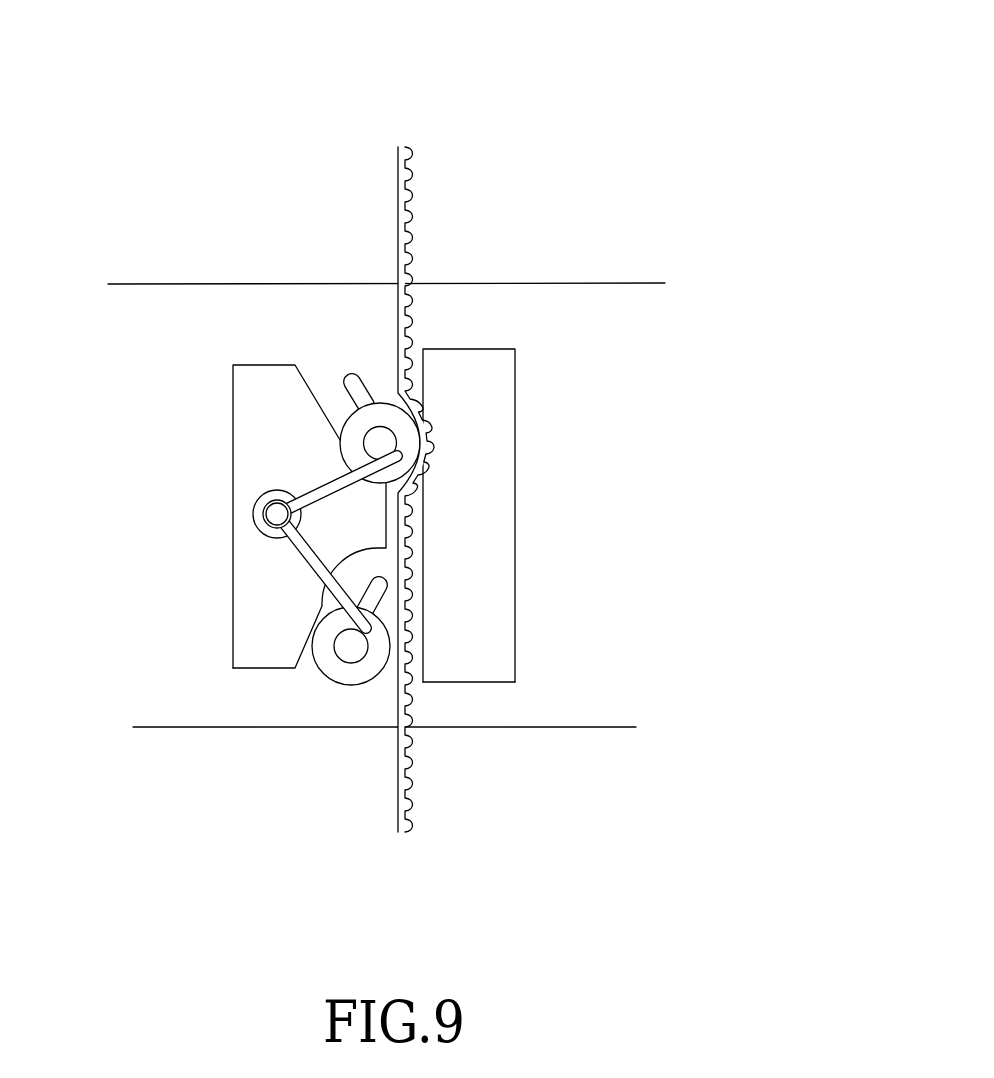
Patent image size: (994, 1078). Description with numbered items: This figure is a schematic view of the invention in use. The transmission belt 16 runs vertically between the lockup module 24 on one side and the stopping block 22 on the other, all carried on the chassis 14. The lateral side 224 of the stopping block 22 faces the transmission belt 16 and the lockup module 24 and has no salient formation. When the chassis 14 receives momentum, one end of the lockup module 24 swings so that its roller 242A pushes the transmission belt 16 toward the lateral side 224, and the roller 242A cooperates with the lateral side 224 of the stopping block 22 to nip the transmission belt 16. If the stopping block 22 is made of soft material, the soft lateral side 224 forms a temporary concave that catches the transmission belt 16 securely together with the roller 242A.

The chassis 14 is at (537, 283).
The transmission belt 16 is at (398, 170).
The stopping block 22 is at (487, 518).
The lateral side 224 is at (424, 641).
The lockup module 24 is at (221, 380).
The roller 242A is at (387, 417).